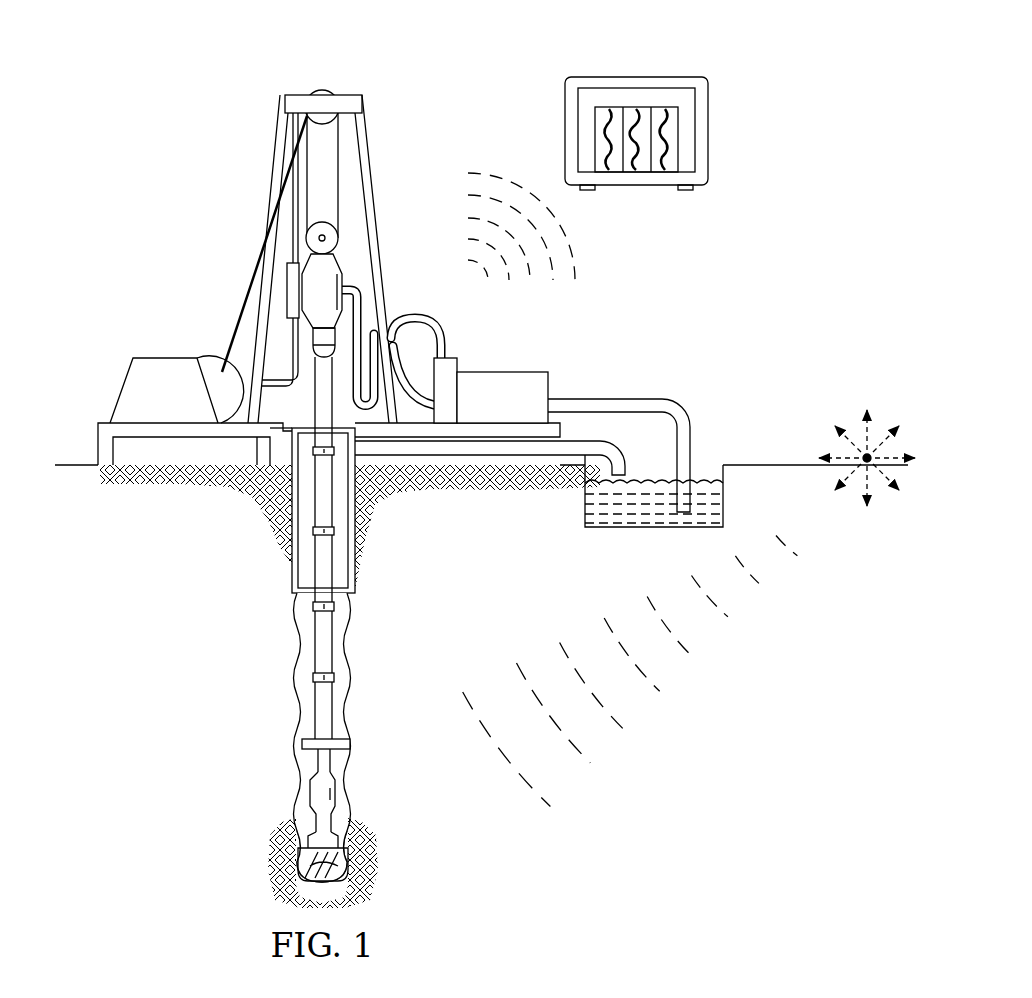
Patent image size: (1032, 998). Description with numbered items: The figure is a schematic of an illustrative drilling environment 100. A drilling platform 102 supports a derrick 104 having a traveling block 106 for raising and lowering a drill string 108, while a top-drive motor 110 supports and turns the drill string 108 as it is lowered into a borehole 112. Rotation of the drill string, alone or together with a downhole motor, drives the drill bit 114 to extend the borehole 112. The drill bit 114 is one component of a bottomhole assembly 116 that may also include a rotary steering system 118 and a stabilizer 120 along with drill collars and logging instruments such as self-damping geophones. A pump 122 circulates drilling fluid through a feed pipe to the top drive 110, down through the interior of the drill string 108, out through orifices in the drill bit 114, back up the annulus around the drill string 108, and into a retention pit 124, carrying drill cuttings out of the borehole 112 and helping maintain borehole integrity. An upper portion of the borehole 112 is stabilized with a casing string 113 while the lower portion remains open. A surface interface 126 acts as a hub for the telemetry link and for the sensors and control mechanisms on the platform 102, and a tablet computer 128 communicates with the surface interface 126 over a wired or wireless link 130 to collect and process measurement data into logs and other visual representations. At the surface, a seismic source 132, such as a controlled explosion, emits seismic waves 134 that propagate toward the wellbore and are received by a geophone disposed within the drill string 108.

The drilling environment 100 is at (192, 74).
The drilling platform 102 is at (100, 433).
The derrick 104 is at (276, 147).
The traveling block 106 is at (318, 240).
The drill string 108 is at (297, 563).
The top-drive motor 110 is at (310, 292).
The borehole 112 is at (307, 513).
The casing string 113 is at (283, 490).
The drill bit 114 is at (342, 863).
The bottomhole assembly 116 is at (318, 763).
The rotary steering system 118 is at (338, 792).
The stabilizer 120 is at (308, 737).
The pump 122 is at (549, 378).
The retention pit 124 is at (651, 521).
The surface interface 126 is at (458, 363).
The tablet computer 128 is at (643, 77).
The wired or wireless link 130 is at (499, 178).
The seismic source 132 is at (848, 413).
The seismic waves 134 is at (677, 739).